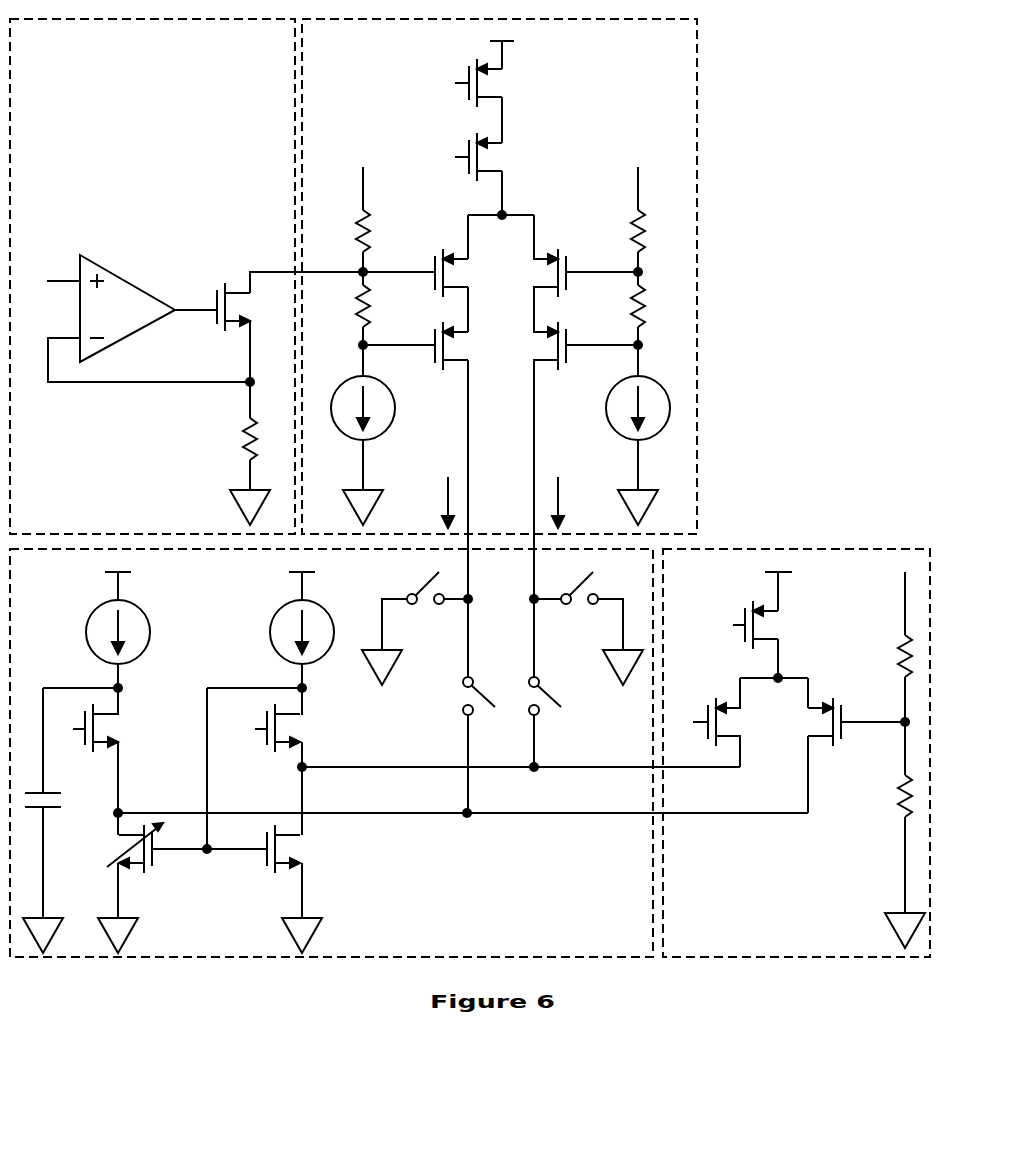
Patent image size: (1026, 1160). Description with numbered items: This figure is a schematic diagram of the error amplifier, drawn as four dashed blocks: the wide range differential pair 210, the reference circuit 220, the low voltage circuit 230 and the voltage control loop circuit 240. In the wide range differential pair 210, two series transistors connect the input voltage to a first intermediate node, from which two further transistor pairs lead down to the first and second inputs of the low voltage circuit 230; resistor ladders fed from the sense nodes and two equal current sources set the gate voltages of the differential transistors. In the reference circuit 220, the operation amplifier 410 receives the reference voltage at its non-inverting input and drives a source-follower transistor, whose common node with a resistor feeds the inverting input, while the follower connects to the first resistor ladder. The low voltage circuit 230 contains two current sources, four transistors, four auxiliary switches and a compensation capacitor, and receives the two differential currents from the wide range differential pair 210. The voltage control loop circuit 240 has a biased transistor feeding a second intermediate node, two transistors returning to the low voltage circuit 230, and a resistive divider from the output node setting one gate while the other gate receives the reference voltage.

The wide range differential pair 210 is at (656, 54).
The reference circuit 220 is at (254, 54).
The low voltage circuit 230 is at (629, 946).
The voltage control loop circuit 240 is at (817, 944).
The operation amplifier 410 is at (146, 319).